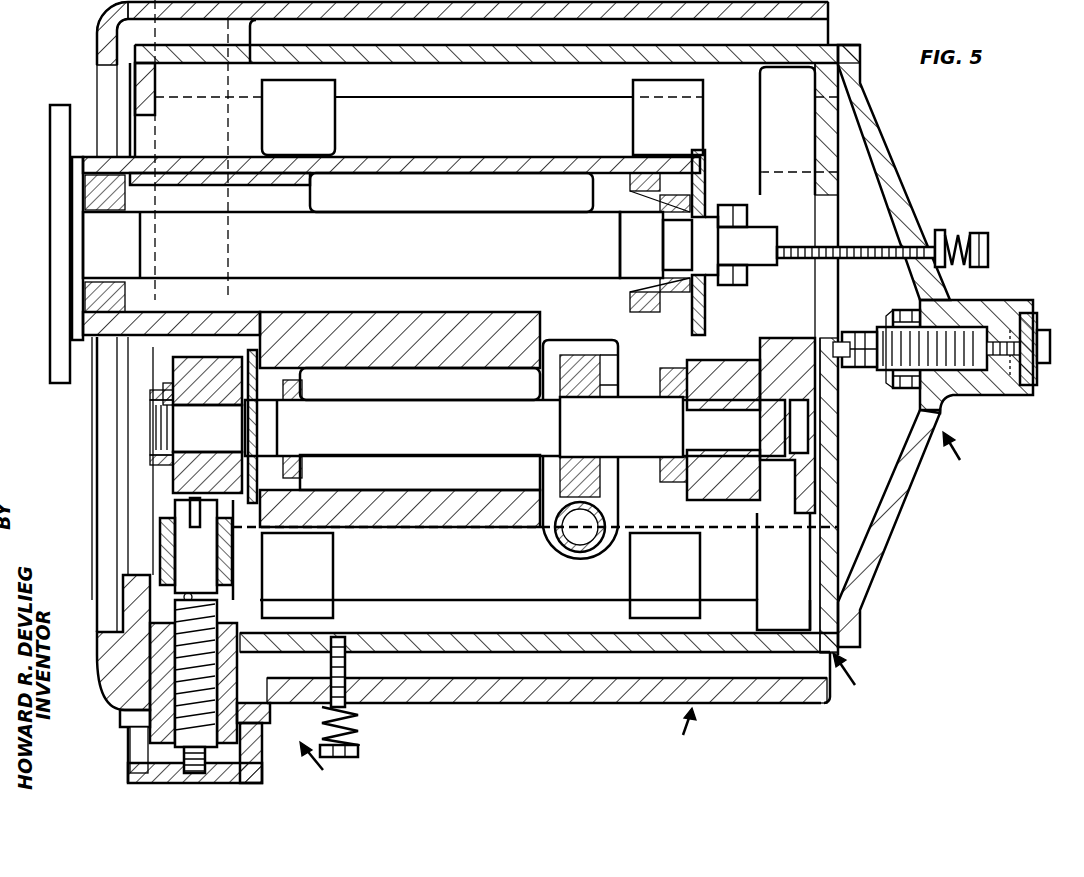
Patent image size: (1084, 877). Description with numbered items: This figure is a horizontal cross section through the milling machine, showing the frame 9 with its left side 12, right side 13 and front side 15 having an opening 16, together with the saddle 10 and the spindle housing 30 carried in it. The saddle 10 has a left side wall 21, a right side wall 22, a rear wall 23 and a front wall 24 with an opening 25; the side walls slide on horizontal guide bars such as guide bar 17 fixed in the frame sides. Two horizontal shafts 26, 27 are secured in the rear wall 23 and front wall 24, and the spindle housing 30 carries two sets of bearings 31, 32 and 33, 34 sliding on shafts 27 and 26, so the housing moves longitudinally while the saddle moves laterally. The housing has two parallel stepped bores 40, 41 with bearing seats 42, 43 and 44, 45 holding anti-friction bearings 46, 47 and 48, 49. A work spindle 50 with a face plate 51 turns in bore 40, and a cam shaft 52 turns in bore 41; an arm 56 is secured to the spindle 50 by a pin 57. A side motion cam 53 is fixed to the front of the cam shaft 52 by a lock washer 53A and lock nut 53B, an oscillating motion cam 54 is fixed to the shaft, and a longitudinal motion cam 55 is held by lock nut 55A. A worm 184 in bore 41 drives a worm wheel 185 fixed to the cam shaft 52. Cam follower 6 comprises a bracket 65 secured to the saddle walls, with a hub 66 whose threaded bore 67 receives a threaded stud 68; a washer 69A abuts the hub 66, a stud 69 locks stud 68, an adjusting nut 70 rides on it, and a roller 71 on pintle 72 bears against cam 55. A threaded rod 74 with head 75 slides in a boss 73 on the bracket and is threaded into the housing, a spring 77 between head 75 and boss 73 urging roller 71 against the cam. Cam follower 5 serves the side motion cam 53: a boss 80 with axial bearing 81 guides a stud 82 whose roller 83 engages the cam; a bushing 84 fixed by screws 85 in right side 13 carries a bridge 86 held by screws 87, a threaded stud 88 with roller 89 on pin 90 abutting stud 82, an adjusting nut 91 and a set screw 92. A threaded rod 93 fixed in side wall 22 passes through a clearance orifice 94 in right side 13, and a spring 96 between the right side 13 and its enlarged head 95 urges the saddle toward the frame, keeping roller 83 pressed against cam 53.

The third cam follower 5 is at (319, 764).
The cam follower 6 is at (954, 458).
The frame 9 is at (684, 733).
The saddle 10 is at (856, 676).
The left side 12 is at (578, 20).
The right side 13 is at (562, 700).
The front side 15 is at (97, 45).
The opening 16 is at (97, 447).
The horizontal guide bar 17 is at (245, 320).
The left side wall 21 is at (468, 48).
The right side wall 22 is at (506, 648).
The rear wall 23 is at (833, 515).
The front wall 24 is at (110, 600).
The opening 25 is at (137, 483).
The horizontal shaft 26 is at (518, 585).
The horizontal shaft 27 is at (525, 122).
The spindle housing 30 is at (421, 352).
The bearing 31 is at (306, 124).
The bearing 32 is at (676, 127).
The bearing 33 is at (311, 589).
The bearing 34 is at (672, 570).
The stepped bore 40 is at (384, 204).
The stepped bore 41 is at (420, 480).
The bearing seat 42 is at (125, 190).
The bearing seat 43 is at (615, 178).
The bearing seat 44 is at (320, 386).
The bearing seat 45 is at (705, 325).
The anti-friction bearing 46 is at (72, 202).
The anti-friction bearing 47 is at (630, 200).
The anti-friction bearing 48 is at (302, 398).
The anti-friction bearing 49 is at (655, 390).
The work spindle 50 is at (500, 244).
The face plate 51 is at (50, 285).
The cam shaft 52 is at (497, 432).
The side motion cam 53 is at (200, 362).
The lock washer 53A is at (163, 393).
The lock nut 53B is at (150, 412).
The oscillating motion cam 54 is at (730, 360).
The longitudinal motion cam 55 is at (780, 338).
The lock nut 55A is at (800, 400).
The arm 56 is at (747, 217).
The pin 57 is at (733, 205).
The bracket 65 is at (905, 490).
The hub 66 is at (1020, 392).
The threaded bore 67 is at (1005, 388).
The externally threaded stud 68 is at (900, 388).
The stud 69 is at (992, 326).
The washer 69A is at (1038, 325).
The adjusting nut 70 is at (890, 312).
The roller 71 is at (868, 336).
The pintle 72 is at (855, 372).
The boss 73 is at (937, 230).
The threaded rod 74 is at (845, 252).
The head 75 is at (983, 233).
The spring 77 is at (958, 236).
The boss 80 is at (160, 530).
The axial bearing 81 is at (175, 560).
The stud 82 is at (209, 557).
The roller 83 is at (190, 512).
The bushing 84 is at (150, 675).
The screws 85 is at (270, 715).
The bridge 86 is at (262, 770).
The screws 87 is at (128, 775).
The threaded stud 88 is at (120, 712).
The roller 89 is at (185, 600).
The pin 90 is at (188, 612).
The adjusting nut 91 is at (130, 745).
The set screw 92 is at (262, 745).
The threaded rod 93 is at (345, 668).
The clearance orifice 94 is at (358, 703).
The enlarged head 95 is at (358, 752).
The spring 96 is at (360, 724).
The worm 184 is at (592, 555).
The worm wheel 185 is at (560, 388).